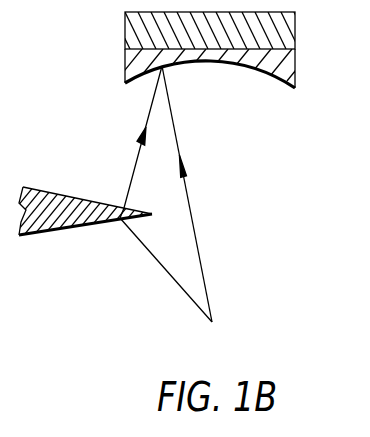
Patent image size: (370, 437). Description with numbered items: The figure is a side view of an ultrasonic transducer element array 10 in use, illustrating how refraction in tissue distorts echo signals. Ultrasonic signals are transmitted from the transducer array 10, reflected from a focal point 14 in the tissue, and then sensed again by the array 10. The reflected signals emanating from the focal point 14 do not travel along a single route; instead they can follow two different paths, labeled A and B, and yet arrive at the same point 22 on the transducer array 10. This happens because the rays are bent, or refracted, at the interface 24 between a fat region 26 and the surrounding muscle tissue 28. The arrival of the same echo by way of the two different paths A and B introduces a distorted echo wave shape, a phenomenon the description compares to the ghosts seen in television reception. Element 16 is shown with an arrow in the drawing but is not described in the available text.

The ultrasonic transducer element array 10 is at (297, 26).
The point at the transducer array 22 is at (185, 66).
The focal point 14 is at (212, 322).
The light path 16 is at (236, 150).
The interface 24 is at (102, 223).
The fat region 26 is at (48, 213).
The muscle tissue 28 is at (88, 152).